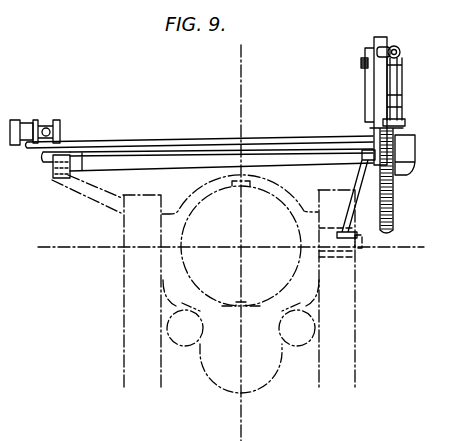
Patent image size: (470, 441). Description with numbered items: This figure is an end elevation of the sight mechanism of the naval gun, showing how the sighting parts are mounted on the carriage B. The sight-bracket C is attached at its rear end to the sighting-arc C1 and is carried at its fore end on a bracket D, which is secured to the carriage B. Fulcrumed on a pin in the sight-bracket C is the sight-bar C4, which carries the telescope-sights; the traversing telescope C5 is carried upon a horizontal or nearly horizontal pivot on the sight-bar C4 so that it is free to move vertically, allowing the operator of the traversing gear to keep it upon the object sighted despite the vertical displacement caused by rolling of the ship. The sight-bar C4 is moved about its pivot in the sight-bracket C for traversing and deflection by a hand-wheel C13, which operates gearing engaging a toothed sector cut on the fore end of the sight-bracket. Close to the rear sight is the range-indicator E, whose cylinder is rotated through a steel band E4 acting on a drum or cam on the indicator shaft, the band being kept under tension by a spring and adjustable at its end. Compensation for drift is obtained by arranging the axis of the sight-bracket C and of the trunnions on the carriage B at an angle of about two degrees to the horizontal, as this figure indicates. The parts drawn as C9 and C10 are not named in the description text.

The carriage B is at (242, 290).
The bracket D is at (417, 186).
The sight-bracket C is at (221, 159).
The sight-bar C4 is at (229, 103).
The traversing telescope C5 is at (50, 122).
The block C9 is at (48, 167).
The end piece C10 is at (30, 153).
The hand-wheel C13 is at (12, 126).
The sighting-arc C1 is at (394, 180).
The range-indicator E is at (378, 36).
The steel band E4 is at (374, 113).